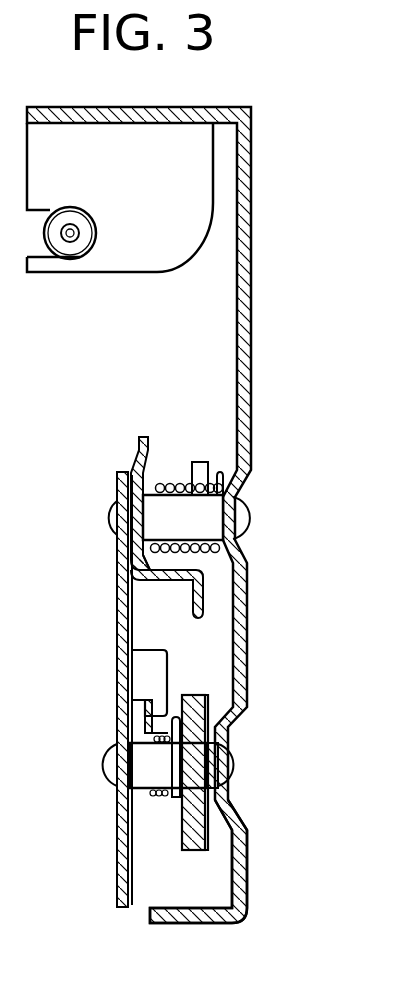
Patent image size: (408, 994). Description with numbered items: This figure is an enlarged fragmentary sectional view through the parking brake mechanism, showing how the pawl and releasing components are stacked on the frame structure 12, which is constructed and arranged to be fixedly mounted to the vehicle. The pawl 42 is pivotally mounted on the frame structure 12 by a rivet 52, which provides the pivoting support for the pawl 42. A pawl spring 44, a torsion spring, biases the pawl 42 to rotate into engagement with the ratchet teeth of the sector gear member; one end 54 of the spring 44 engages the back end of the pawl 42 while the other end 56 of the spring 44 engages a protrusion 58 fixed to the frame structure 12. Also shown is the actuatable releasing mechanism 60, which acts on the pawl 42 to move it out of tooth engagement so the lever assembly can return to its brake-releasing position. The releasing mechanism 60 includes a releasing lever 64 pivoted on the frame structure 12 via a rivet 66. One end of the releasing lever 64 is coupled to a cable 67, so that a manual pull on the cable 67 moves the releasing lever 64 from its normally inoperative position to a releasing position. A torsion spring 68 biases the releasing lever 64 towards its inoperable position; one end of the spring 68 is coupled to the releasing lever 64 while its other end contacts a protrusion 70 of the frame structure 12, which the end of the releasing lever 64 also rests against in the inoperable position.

The frame structure 12 is at (253, 282).
The pawl 42 is at (240, 824).
The pawl spring 44 is at (152, 798).
The rivet 52 is at (233, 762).
The one end of spring 54 is at (177, 687).
The other end of spring 56 is at (147, 713).
The protrusion 58 is at (150, 669).
The actuatable releasing mechanism 60 is at (162, 475).
The releasing lever 64 is at (162, 585).
The rivet 66 is at (243, 522).
The cable 67 is at (72, 240).
The torsion spring 68 is at (178, 487).
The protrusion 70 is at (203, 476).